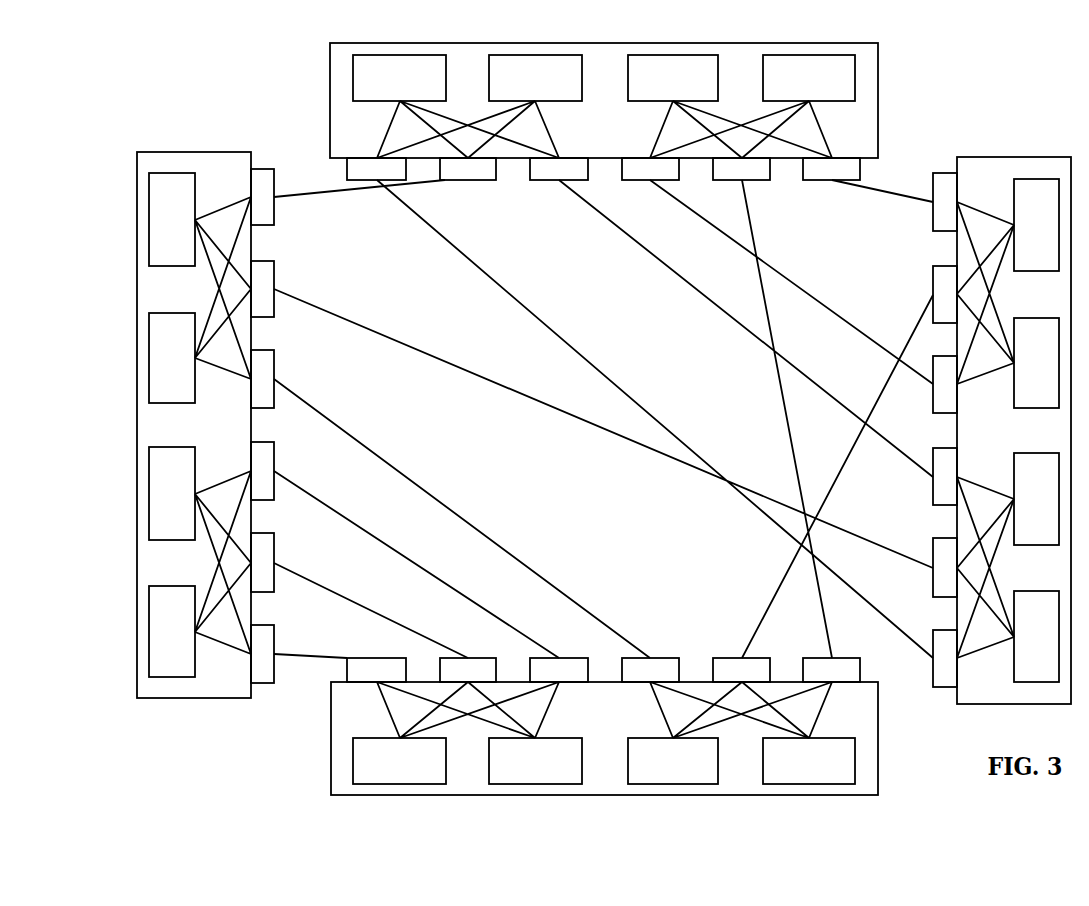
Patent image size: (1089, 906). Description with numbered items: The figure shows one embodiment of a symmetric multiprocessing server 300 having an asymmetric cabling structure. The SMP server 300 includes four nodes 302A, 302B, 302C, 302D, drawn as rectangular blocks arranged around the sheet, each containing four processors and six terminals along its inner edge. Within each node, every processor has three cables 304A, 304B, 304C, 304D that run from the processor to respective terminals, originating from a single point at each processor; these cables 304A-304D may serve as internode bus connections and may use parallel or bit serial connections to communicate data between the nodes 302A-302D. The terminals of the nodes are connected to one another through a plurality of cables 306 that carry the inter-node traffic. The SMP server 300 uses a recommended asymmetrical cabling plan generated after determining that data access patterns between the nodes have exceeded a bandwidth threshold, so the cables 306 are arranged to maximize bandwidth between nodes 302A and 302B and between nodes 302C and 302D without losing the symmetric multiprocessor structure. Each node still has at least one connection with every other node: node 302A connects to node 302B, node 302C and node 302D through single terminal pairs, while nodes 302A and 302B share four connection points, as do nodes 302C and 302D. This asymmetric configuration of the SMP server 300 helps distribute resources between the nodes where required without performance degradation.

The SMP server 300 is at (1010, 92).
The node 302A is at (604, 111).
The node 302B is at (1002, 430).
The node 302C is at (604, 726).
The node 302D is at (205, 425).
The cables 304A is at (489, 117).
The cables 304B is at (1000, 314).
The cables 304C is at (484, 717).
The cables 304D is at (215, 303).
The plurality of cables 306 is at (840, 399).